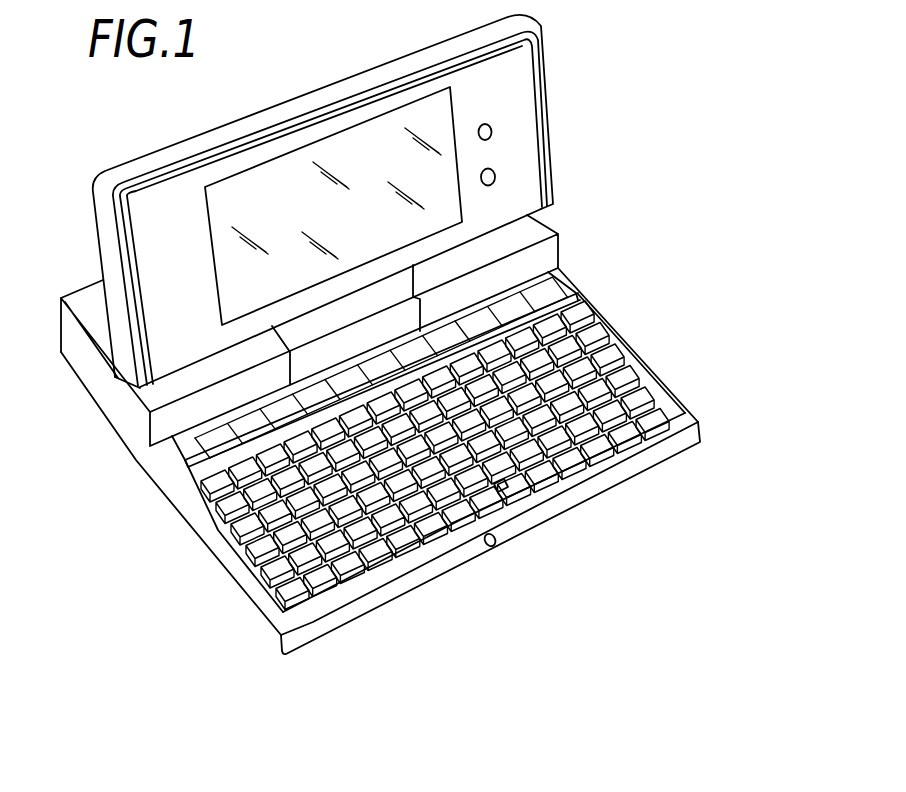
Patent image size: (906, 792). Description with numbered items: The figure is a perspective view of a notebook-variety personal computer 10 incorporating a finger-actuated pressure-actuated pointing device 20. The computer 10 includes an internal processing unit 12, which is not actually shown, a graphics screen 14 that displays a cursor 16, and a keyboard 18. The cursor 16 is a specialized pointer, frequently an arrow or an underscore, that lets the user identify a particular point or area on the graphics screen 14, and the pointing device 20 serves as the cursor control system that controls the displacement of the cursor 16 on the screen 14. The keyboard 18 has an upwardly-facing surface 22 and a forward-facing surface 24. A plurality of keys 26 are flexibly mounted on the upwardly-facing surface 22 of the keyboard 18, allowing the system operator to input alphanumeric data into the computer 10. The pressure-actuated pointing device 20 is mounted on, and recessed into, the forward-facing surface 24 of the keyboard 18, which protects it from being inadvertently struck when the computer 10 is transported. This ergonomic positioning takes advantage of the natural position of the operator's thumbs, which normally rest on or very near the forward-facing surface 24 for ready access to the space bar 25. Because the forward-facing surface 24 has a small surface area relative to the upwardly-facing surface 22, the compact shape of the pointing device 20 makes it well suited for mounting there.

The personal computer 10 is at (584, 175).
The internal processing unit 12 is at (515, 240).
The graphics screen 14 is at (424, 113).
The cursor 16 is at (241, 203).
The keyboard 18 is at (214, 531).
The pressure-actuated pointing device 20 is at (498, 568).
The upwardly-facing surface 22 is at (685, 434).
The forward-facing surface 24 is at (648, 466).
The space bar 25 is at (486, 496).
The keys 26 is at (573, 316).